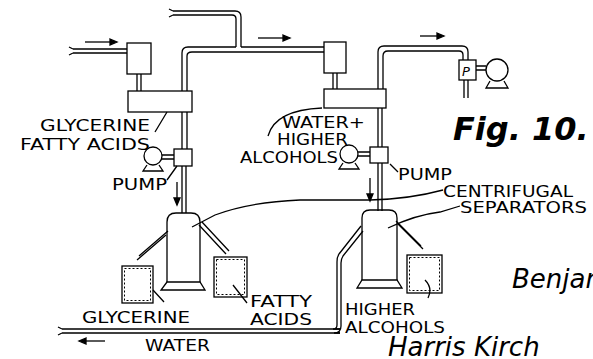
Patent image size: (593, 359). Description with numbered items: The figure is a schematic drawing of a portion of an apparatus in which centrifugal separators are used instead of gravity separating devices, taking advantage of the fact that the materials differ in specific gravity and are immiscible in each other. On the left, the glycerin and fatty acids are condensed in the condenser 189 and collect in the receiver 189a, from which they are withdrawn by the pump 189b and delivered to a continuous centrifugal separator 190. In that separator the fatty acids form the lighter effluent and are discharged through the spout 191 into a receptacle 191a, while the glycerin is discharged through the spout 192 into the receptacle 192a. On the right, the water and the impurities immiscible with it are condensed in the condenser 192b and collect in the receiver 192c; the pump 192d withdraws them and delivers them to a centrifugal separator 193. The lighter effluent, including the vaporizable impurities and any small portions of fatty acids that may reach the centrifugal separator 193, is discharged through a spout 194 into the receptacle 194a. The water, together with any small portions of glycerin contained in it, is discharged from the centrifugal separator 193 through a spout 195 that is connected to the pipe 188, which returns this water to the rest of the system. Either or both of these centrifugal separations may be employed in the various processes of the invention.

The pipe 188 is at (225, 334).
The condenser 189 is at (133, 62).
The receiver 189a is at (190, 92).
The pump 189b is at (192, 157).
The continuous centrifugal separator 190 is at (193, 212).
The spout 191 is at (225, 222).
The receptacle 191a is at (236, 262).
The spout 192 is at (152, 243).
The receptacle 192a is at (123, 280).
The condenser 192b is at (332, 40).
The receiver 192c is at (386, 97).
The pump 192d is at (397, 151).
The centrifugal separator 193 is at (392, 195).
The spout 194 is at (412, 236).
The receptacle 194a is at (452, 257).
The spout 195 is at (340, 244).